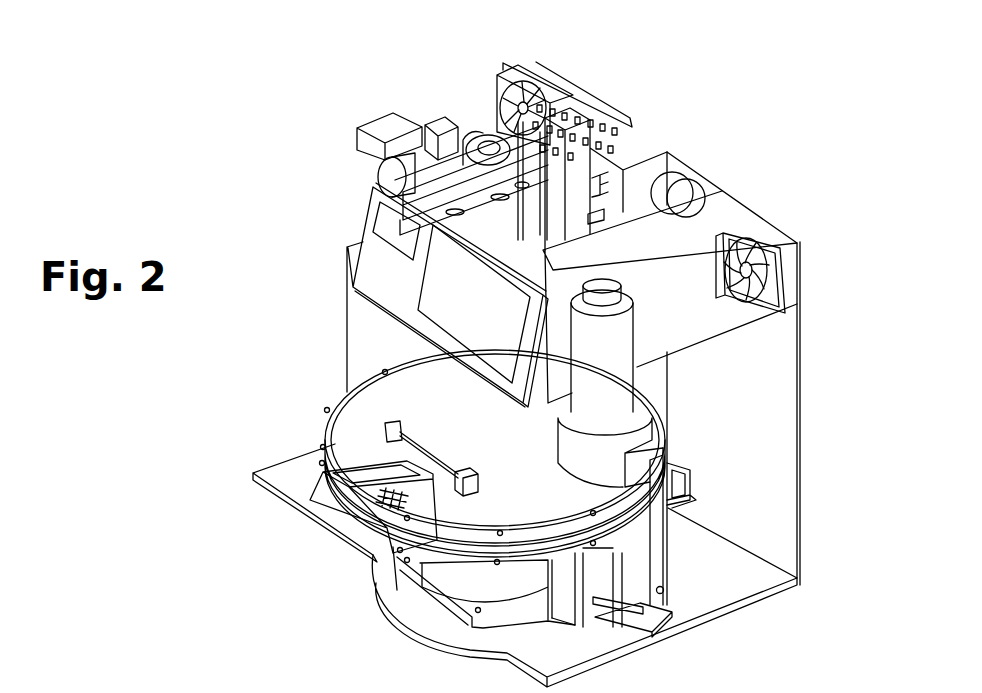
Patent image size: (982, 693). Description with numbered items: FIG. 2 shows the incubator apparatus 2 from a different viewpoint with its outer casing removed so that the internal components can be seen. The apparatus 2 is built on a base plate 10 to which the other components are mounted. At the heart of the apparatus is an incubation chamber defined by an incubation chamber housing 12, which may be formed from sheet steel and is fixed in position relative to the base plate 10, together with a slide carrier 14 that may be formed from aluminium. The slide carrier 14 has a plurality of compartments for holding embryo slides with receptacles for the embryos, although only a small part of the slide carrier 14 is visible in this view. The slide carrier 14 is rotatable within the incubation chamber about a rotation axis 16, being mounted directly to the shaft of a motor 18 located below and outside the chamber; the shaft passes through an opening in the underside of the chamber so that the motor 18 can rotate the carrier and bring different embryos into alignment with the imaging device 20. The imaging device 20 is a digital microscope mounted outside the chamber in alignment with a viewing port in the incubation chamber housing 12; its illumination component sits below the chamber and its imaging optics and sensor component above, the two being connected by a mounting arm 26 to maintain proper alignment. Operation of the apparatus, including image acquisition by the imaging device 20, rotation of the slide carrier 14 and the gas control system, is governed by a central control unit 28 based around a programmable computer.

The incubator apparatus 2 is at (847, 138).
The base plate 10 is at (763, 603).
The incubation chamber housing 12 is at (370, 408).
The slide carrier 14 is at (355, 491).
The rotation axis 16 is at (497, 447).
The motor 18 is at (437, 565).
The imaging device 20 is at (617, 388).
The mounting arm 26 is at (662, 533).
The central control unit 28 is at (667, 210).